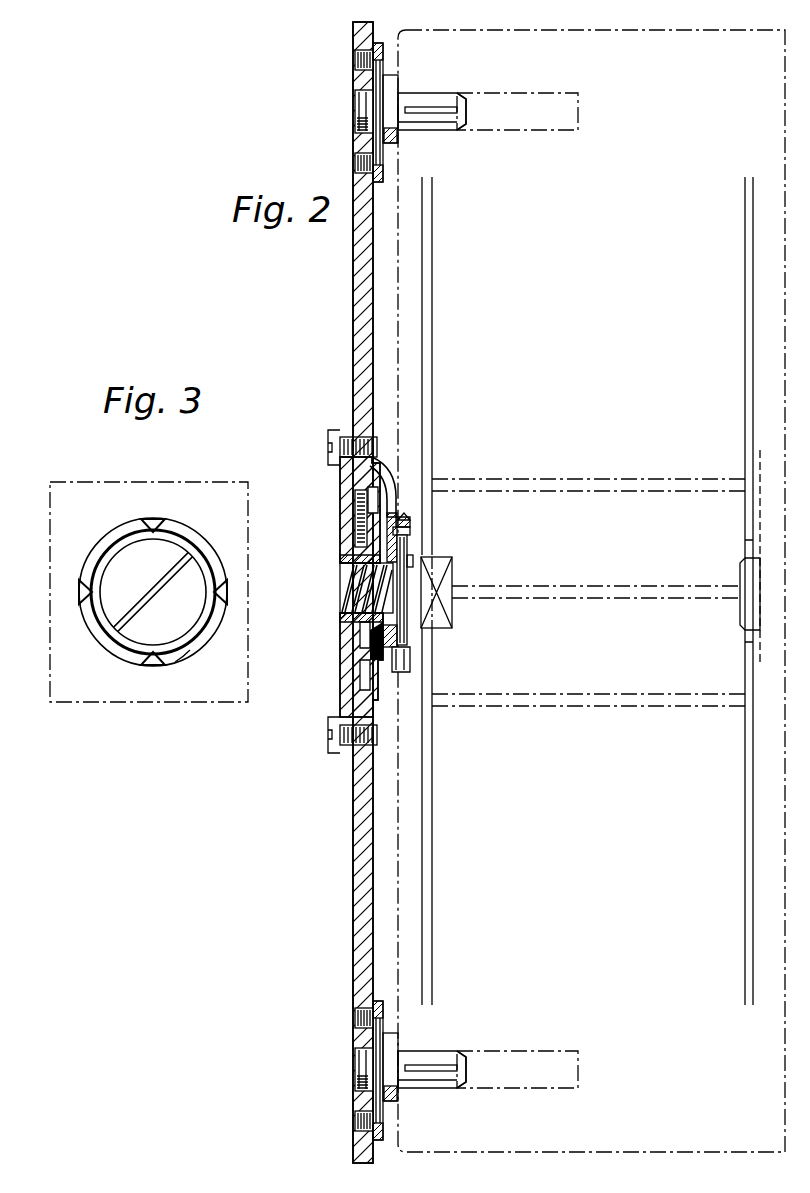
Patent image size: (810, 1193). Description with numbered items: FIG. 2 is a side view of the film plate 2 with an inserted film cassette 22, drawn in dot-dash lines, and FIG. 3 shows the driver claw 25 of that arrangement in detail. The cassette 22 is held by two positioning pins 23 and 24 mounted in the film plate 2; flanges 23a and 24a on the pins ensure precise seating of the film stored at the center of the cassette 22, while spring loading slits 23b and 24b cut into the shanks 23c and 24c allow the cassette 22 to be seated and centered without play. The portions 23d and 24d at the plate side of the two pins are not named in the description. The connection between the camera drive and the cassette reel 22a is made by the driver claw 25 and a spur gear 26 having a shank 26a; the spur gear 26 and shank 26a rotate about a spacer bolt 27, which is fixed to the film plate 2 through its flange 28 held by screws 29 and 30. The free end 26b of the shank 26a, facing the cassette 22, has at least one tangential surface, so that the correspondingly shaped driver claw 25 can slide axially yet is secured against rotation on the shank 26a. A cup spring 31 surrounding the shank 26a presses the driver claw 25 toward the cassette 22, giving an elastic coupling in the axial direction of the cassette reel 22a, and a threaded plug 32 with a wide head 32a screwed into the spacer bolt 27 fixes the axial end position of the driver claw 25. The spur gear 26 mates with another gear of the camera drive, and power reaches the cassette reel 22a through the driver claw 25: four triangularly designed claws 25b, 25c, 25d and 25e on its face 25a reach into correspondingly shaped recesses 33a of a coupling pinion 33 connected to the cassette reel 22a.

In FIG. 2, the film plate 2 is at (360, 820).
In FIG. 3, the film plate 2 is at (190, 486).
In FIG. 2, the cassette 22 is at (453, 876).
In FIG. 2, the cassette reel 22a is at (748, 377).
In FIG. 2, the positioning pin 23 is at (432, 102).
In FIG. 2, the flange 23a is at (392, 136).
In FIG. 2, the spring loading slit 23b is at (468, 112).
In FIG. 2, the shank 23c is at (423, 92).
In FIG. 2, the pin threaded mounting 23d is at (366, 110).
In FIG. 2, the positioning pin 24 is at (440, 1085).
In FIG. 2, the flange 24a is at (402, 1049).
In FIG. 2, the spring loading slit 24b is at (463, 1071).
In FIG. 2, the shank 24c is at (432, 1090).
In FIG. 2, the pin threaded mounting 24d is at (366, 1070).
In FIG. 2, the driver claw 25 is at (370, 474).
In FIG. 3, the driver claw 25 is at (172, 668).
In FIG. 2, the face 25a is at (405, 518).
In FIG. 3, the face 25a is at (195, 639).
In FIG. 2, the claw 25b is at (408, 672).
In FIG. 3, the claw 25b is at (153, 668).
In FIG. 3, the claw 25c is at (83, 596).
In FIG. 2, the claw 25d is at (407, 520).
In FIG. 3, the claw 25d is at (155, 518).
In FIG. 2, the claw 25e is at (415, 601).
In FIG. 3, the claw 25e is at (226, 590).
In FIG. 2, the spur gear 26 is at (360, 666).
In FIG. 2, the shank 26a is at (350, 623).
In FIG. 2, the free end 26b is at (403, 633).
In FIG. 2, the spacer bolt 27 is at (352, 563).
In FIG. 2, the flange 28 is at (348, 517).
In FIG. 2, the screw 29 is at (328, 438).
In FIG. 2, the screw 30 is at (328, 741).
In FIG. 2, the cup spring 31 is at (368, 645).
In FIG. 2, the threaded plug 32 is at (353, 589).
In FIG. 2, the wide head 32a is at (409, 560).
In FIG. 3, the wide head 32a is at (124, 573).
In FIG. 2, the coupling pinion 33 is at (414, 544).
In FIG. 2, the recess 33a is at (411, 533).